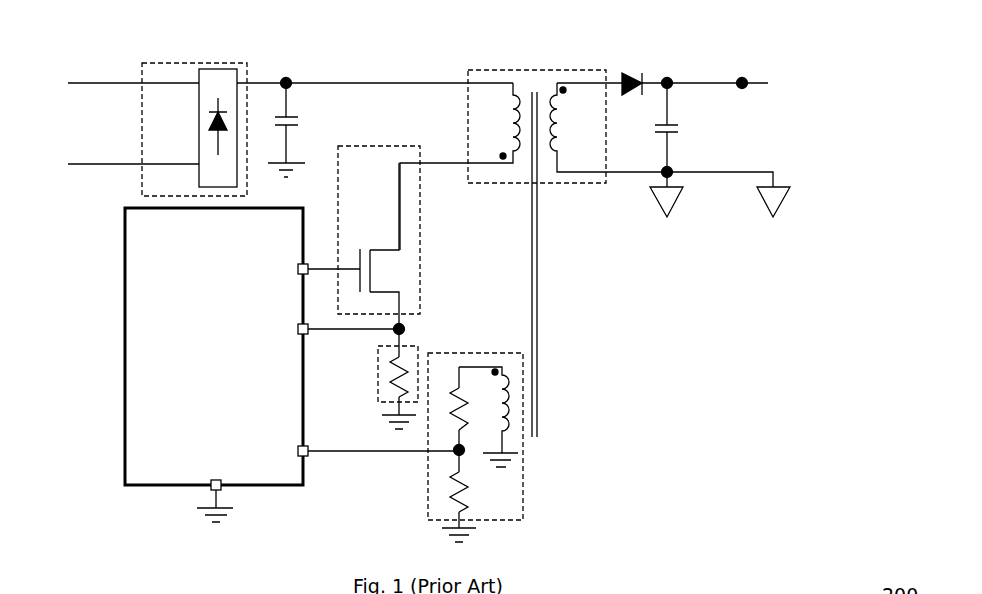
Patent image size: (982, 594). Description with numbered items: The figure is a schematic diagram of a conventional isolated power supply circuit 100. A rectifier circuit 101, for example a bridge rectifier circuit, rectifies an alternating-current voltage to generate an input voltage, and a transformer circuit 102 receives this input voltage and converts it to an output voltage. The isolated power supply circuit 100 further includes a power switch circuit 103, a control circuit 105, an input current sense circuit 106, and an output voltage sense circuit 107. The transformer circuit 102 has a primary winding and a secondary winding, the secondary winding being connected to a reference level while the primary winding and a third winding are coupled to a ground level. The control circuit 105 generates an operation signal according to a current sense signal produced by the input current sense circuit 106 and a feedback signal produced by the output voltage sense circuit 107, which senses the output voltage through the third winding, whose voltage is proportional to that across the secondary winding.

The isolated power supply circuit 100 is at (833, 53).
The rectifier circuit 101 is at (178, 190).
The transformer circuit 102 is at (547, 69).
The power switch circuit 103 is at (381, 176).
The control circuit 105 is at (170, 475).
The input current sense circuit 106 is at (378, 367).
The output voltage sense circuit 107 is at (428, 473).